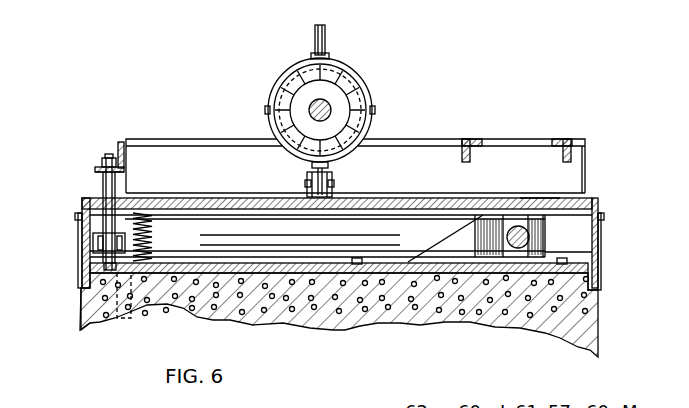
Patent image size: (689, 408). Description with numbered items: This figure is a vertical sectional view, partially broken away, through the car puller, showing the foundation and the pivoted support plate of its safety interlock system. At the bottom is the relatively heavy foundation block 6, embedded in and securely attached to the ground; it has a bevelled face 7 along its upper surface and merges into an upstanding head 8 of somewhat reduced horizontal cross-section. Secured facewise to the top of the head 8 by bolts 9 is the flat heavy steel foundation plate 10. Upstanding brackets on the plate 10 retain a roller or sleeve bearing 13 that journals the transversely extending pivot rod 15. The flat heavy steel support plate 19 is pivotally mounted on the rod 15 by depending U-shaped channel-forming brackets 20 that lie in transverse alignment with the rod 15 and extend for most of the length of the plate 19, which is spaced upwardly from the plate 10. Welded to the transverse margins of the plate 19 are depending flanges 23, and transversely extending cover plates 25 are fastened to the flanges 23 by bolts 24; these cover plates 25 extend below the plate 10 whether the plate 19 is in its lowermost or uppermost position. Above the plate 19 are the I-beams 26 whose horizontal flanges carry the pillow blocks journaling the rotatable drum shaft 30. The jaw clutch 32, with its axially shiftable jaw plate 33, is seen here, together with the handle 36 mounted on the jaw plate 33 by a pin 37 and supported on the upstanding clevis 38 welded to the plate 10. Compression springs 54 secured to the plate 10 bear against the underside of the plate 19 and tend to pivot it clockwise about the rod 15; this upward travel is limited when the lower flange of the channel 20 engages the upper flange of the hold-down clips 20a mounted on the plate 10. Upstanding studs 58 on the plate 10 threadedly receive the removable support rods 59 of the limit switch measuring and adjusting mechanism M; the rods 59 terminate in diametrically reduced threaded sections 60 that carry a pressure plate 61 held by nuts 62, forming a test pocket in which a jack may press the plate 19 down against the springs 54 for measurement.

The foundation block 6 is at (599, 343).
The bevelled face 7 is at (88, 303).
The upstanding head 8 is at (592, 290).
The bolts 9 is at (322, 236).
The foundation plate 10 is at (410, 252).
The roller or sleeve bearing 13 is at (513, 246).
The pivot rod 15 is at (532, 238).
The support plate 19 is at (533, 198).
The channel-forming brackets 20 is at (319, 243).
The hold-down clips 20a is at (132, 318).
The depending flanges 23 is at (84, 199).
The bolts 24 is at (82, 214).
The cover plates 25 is at (78, 238).
The I-beams 26 is at (586, 163).
The drum shaft 30 is at (330, 103).
The jaw clutch 32 is at (279, 71).
The jaw plate 33 is at (266, 100).
The handle 36 is at (313, 37).
The pin 37 is at (376, 108).
The clevis 38 is at (333, 187).
The compression springs 54 is at (160, 210).
The studs 58 is at (97, 260).
The support rods 59 is at (103, 187).
The threaded sections 60 is at (108, 158).
The pressure plate 61 is at (124, 146).
The nuts 62 is at (101, 157).
The limit switch measuring and adjusting mechanism M is at (97, 165).